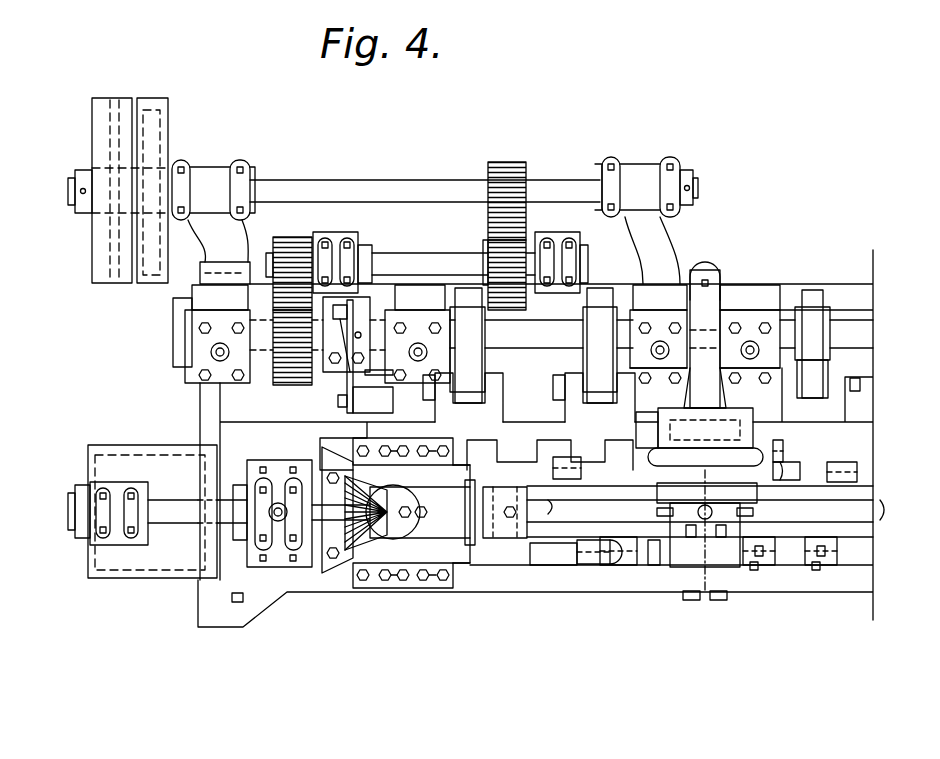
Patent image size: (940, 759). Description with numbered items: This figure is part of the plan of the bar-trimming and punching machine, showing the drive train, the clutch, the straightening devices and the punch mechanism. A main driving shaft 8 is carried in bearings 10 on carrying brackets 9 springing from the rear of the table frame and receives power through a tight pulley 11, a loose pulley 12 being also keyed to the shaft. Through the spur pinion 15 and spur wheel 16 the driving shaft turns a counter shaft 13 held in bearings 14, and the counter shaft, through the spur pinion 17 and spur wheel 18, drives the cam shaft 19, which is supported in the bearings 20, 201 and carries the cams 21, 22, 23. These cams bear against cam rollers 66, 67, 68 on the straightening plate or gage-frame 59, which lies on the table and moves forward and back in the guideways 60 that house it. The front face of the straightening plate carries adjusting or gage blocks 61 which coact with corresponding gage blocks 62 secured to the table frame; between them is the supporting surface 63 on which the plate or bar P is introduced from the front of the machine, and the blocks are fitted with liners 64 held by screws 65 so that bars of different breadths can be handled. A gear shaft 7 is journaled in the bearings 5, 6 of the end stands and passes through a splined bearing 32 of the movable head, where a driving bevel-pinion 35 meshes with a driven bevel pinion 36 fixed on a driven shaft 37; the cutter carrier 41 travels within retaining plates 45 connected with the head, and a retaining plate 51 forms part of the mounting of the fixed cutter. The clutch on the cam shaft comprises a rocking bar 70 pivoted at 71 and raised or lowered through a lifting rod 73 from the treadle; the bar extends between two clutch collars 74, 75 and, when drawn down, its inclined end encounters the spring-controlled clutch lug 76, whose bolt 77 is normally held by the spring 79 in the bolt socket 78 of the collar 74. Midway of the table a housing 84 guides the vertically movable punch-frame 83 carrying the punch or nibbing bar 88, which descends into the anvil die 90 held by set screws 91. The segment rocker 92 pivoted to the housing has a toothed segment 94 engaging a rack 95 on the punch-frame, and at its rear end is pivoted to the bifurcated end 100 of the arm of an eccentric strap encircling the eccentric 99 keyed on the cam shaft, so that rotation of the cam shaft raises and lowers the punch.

The bearing 5 is at (142, 511).
The bearing 6 is at (828, 483).
The gear shaft 7 is at (510, 514).
The main driving shaft 8 is at (425, 181).
The carrying brackets 9 is at (434, 250).
The bearings 10 is at (435, 188).
The tight pulley 11 is at (100, 253).
The loose pulley 12 is at (165, 125).
The counter shaft 13 is at (418, 250).
The bearings 14 is at (336, 233).
The spur pinion 15 is at (503, 164).
The spur wheel 16 is at (495, 248).
The spur pinion 17 is at (290, 240).
The spur wheel 18 is at (287, 386).
The cam shaft 19 is at (173, 333).
The bearing 20 is at (229, 334).
The bearing 201 is at (381, 334).
The cam 21 is at (467, 345).
The cam 22 is at (594, 293).
The cam 23 is at (812, 300).
The splined bearing 32 is at (281, 568).
The driving bevel-pinion 35 is at (352, 535).
The driven bevel pinion 36 is at (368, 550).
The driven shaft 37 is at (428, 512).
The cutter carrier 41 is at (462, 565).
The retaining plates 45 is at (416, 590).
The retaining plate 51 is at (477, 546).
The straightening plate 59 is at (512, 445).
The guideways 60 is at (355, 432).
The adjusting or gage blocks 61 is at (796, 481).
The adjusting or gage blocks 62 is at (563, 566).
The supporting surface 63 is at (520, 479).
The liners 64 is at (858, 472).
The screws 65 is at (576, 458).
The cam roller 66 is at (470, 388).
The cam roller 67 is at (597, 388).
The cam roller 68 is at (820, 386).
The rocking bar 70 is at (402, 384).
The pivot 71 is at (347, 405).
The lifting rod 73 is at (385, 386).
The clutch collar 74 is at (330, 363).
The clutch collar 75 is at (364, 363).
The clutch lug 76 is at (347, 309).
The bolt 77 is at (346, 334).
The bolt socket 78 is at (345, 394).
The spring 79 is at (365, 333).
The punch-frame 83 is at (745, 500).
The housing 84 is at (658, 425).
The punch or nibbing bar 88 is at (705, 535).
The anvil die 90 is at (697, 515).
The set screws 91 is at (657, 512).
The segment rocker 92 is at (718, 390).
The toothed segment 94 is at (705, 438).
The rack 95 is at (705, 458).
The eccentric 99 is at (702, 270).
The bifurcated end 100 is at (682, 318).
The plate or bar P is at (718, 511).